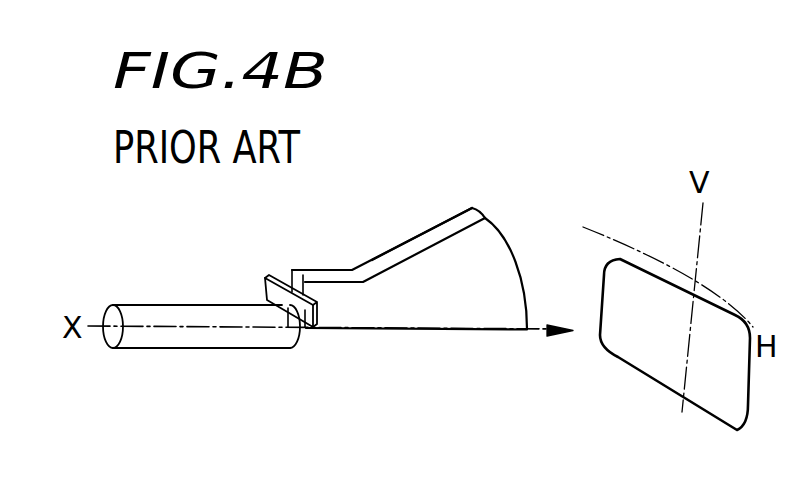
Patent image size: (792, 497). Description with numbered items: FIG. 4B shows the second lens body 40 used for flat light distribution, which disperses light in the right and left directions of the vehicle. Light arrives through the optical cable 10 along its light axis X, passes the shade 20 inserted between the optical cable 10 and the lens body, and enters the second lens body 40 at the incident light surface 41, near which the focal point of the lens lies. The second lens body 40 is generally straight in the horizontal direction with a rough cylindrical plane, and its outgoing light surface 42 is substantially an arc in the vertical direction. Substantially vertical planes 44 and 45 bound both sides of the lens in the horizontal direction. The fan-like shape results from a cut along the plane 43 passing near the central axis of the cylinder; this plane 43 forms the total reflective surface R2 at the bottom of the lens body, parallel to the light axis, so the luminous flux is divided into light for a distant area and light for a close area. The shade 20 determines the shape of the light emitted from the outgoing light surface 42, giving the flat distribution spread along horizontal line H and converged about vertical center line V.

The optical cable 10 is at (178, 335).
The shade 20 is at (260, 288).
The second lens body 40 is at (382, 258).
The incident light surface 41 is at (290, 282).
The outgoing light surface 42 is at (525, 287).
The plane (cut surface) 43 is at (413, 332).
The vertical plane 44 is at (430, 237).
The vertical plane 45 is at (487, 247).